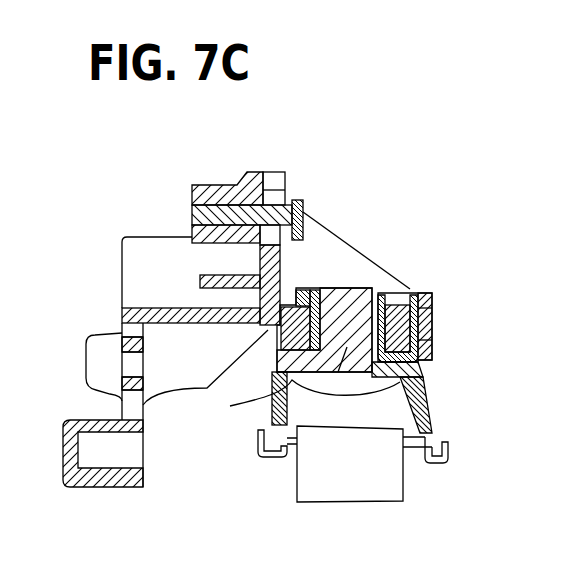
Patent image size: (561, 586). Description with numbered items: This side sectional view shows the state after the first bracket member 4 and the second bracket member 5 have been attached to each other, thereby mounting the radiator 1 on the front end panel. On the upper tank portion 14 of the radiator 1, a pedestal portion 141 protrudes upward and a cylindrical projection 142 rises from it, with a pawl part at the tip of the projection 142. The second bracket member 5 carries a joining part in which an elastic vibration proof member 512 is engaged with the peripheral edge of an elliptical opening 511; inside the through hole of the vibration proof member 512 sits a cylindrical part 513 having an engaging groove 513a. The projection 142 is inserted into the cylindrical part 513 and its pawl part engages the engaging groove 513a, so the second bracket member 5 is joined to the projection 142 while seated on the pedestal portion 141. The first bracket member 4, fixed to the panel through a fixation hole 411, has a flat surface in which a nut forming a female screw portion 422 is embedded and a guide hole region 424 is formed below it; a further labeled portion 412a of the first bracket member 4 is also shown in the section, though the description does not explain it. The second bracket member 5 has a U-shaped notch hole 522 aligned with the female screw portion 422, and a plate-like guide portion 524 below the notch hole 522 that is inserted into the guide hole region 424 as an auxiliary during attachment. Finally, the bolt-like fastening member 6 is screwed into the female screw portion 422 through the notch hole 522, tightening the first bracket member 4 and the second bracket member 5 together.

The radiator 1 is at (424, 489).
The first bracket member 4 is at (179, 178).
The second bracket member 5 is at (422, 271).
The fastening member 6 is at (310, 183).
The upper tank portion 14 is at (443, 398).
The pedestal portion 141 is at (425, 368).
The projection 142 is at (288, 382).
The fixation hole 411 is at (130, 358).
The housing projection 412a is at (383, 288).
The female screw portion 422 is at (215, 184).
The guide hole region 424 is at (213, 298).
The opening 511 is at (433, 302).
The vibration proof member 512 is at (432, 340).
The cylindrical part 513 is at (320, 289).
The engaging groove 513a is at (407, 290).
The notch hole 522 is at (279, 171).
The guide portion 524 is at (225, 277).